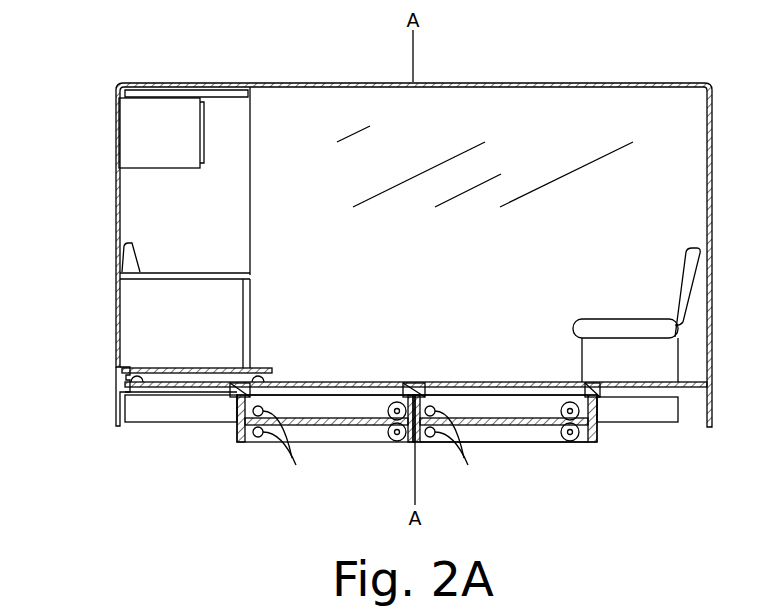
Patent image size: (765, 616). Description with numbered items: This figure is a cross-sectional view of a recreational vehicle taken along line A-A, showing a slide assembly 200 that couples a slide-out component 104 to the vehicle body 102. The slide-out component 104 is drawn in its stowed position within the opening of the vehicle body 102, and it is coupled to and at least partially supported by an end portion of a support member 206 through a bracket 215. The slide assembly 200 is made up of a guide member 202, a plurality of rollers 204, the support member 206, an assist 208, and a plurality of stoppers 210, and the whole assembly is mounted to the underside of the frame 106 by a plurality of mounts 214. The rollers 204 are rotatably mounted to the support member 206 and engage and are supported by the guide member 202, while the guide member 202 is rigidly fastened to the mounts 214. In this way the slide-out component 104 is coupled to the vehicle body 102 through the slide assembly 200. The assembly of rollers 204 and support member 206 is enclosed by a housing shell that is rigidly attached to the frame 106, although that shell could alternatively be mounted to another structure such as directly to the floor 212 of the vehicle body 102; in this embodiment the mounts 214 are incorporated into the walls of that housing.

The vehicle body 102 is at (502, 82).
The slide-out component 104 is at (116, 178).
The frame 106 is at (238, 385).
The slide assembly 200 is at (588, 473).
The guide member 202 is at (465, 398).
The rollers 204 is at (388, 411).
The support member 206 is at (228, 425).
The assist 208 is at (660, 422).
The stoppers 210 is at (284, 450).
The floor 212 is at (558, 398).
The mounts 214 is at (240, 445).
The bracket 215 is at (116, 375).